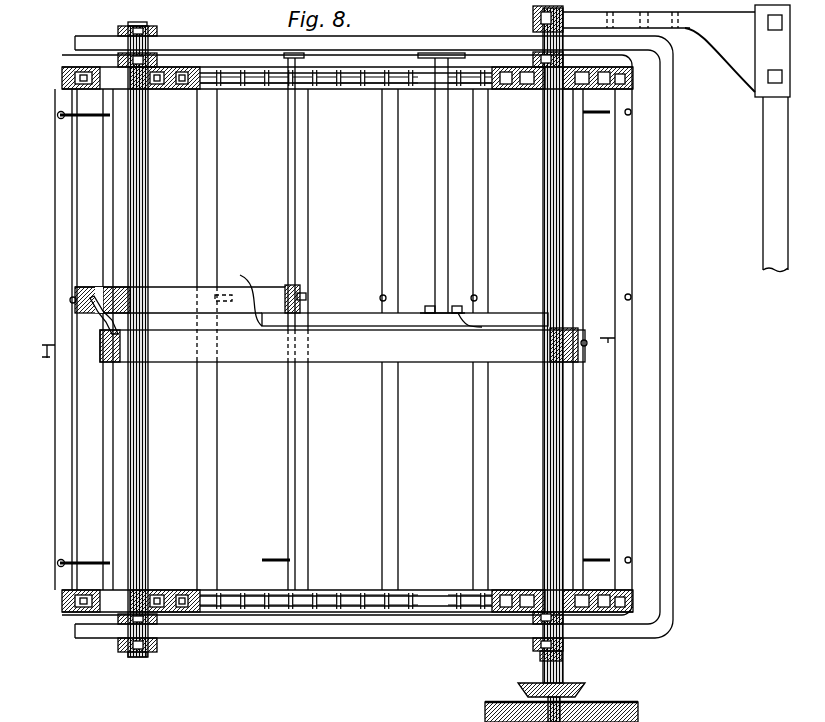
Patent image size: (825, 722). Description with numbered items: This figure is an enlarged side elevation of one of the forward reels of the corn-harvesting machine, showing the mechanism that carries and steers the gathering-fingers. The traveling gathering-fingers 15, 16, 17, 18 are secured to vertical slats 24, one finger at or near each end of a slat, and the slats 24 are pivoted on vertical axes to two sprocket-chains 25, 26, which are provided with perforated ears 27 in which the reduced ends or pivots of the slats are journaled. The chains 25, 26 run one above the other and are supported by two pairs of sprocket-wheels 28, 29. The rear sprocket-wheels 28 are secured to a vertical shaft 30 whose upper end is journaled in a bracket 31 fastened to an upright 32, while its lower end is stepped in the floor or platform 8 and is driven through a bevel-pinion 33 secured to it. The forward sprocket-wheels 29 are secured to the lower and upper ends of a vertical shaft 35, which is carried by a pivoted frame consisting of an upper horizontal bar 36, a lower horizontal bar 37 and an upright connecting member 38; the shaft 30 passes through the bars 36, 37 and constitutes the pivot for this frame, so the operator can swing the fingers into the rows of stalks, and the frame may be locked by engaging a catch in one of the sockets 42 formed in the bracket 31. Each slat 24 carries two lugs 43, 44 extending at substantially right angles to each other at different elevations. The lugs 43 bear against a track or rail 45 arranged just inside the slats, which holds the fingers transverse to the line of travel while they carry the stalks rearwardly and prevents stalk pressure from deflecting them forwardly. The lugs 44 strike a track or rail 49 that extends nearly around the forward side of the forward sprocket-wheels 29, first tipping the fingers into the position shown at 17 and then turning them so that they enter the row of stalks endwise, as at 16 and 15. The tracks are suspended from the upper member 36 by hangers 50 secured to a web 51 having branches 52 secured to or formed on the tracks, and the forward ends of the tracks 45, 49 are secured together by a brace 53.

The platform 8 is at (620, 705).
The gathering-finger 15 is at (58, 117).
The gathering-finger 16 is at (92, 120).
The gathering-finger 17 is at (597, 115).
The gathering-finger 18 is at (632, 112).
The vertical slat 24 is at (632, 220).
The sprocket-chain 25 is at (232, 90).
The sprocket-chain 26 is at (230, 592).
The perforated ear 27 is at (62, 82).
The sprocket-wheel 28 is at (505, 90).
The sprocket-wheel 29 is at (170, 90).
The vertical shaft 30 is at (545, 425).
The bracket 31 is at (659, 18).
The upright 32 is at (763, 152).
The bevel-pinion 33 is at (520, 688).
The vertical shaft 35 is at (148, 438).
The upper horizontal bar 36 is at (222, 38).
The lower horizontal bar 37 is at (268, 638).
The upright connecting member 38 is at (673, 382).
The socket 42 is at (700, 35).
The lug 43 is at (605, 338).
The lug 44 is at (386, 298).
The track 45 is at (345, 375).
The track 49 is at (170, 287).
The hanger 50 is at (295, 230).
The web 51 is at (336, 316).
The branch 52 is at (498, 305).
The brace 53 is at (102, 330).